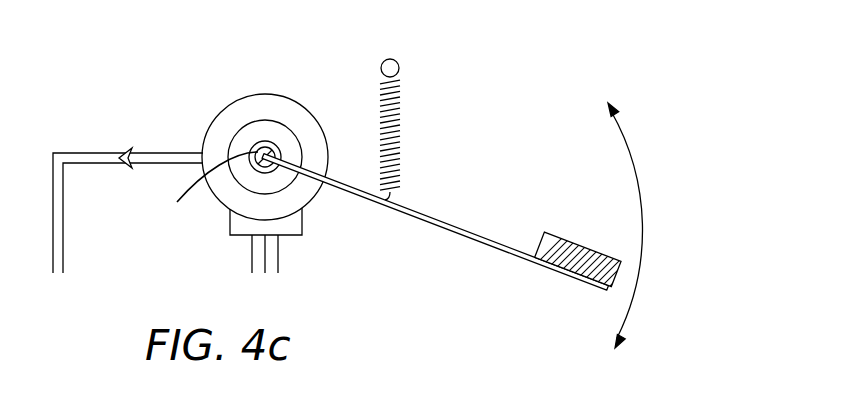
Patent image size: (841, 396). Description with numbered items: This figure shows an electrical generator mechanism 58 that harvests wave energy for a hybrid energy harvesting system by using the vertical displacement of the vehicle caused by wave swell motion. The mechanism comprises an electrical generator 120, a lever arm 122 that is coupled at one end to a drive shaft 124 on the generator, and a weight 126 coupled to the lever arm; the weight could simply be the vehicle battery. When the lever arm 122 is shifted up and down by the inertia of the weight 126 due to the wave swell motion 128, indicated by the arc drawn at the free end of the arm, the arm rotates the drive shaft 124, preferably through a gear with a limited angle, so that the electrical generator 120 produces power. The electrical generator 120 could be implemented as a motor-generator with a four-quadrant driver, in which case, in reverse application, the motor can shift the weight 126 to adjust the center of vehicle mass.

The electrical generator mechanism 58 is at (500, 68).
The electrical generator 120 is at (242, 96).
The lever arm 122 is at (470, 241).
The drive shaft 124 is at (198, 192).
The weight 126 is at (561, 231).
The wave swell motion 128 is at (625, 137).